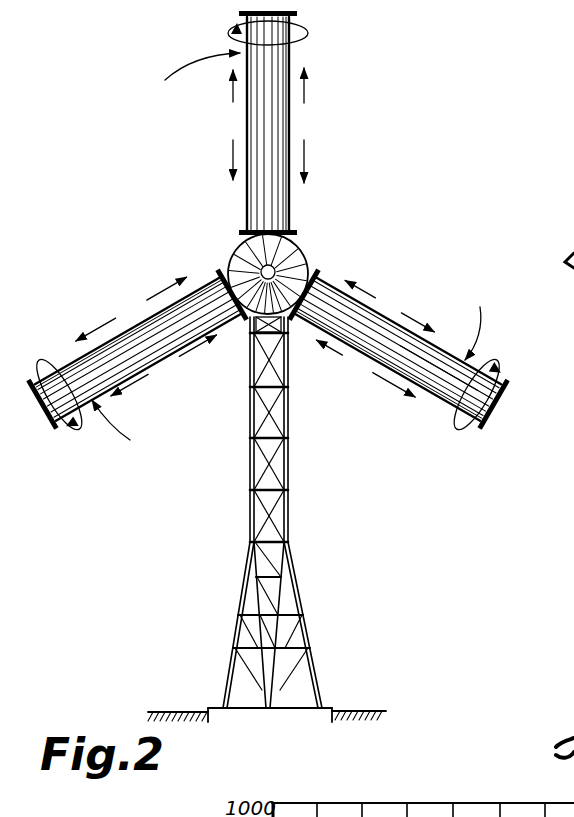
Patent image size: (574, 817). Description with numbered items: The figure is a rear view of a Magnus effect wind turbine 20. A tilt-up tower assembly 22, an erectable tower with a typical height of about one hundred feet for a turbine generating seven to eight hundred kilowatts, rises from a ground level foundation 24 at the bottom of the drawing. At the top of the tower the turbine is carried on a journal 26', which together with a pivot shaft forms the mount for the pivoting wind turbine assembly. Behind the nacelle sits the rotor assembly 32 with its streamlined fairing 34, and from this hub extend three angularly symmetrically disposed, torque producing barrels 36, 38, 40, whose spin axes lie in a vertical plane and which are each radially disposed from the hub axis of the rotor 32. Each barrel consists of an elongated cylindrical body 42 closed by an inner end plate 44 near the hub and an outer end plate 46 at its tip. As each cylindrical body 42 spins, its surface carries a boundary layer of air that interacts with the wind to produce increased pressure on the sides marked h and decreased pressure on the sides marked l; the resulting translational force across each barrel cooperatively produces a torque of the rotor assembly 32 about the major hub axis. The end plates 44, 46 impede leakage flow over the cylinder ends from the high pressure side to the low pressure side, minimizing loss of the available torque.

The wind turbine 20 is at (336, 251).
The tilt-up tower assembly 22 is at (283, 512).
The ground level foundation 24 is at (323, 707).
The journal 26' is at (293, 363).
The rotor assembly 32 is at (308, 257).
The streamlined fairing 34 is at (301, 244).
The torque producing barrel 36 is at (256, 127).
The torque producing barrel 38 is at (183, 297).
The torque producing barrel 40 is at (418, 349).
The elongated cylindrical body 42 is at (439, 368).
The inner end plate 44 is at (318, 268).
The outer end plate 46 is at (504, 385).